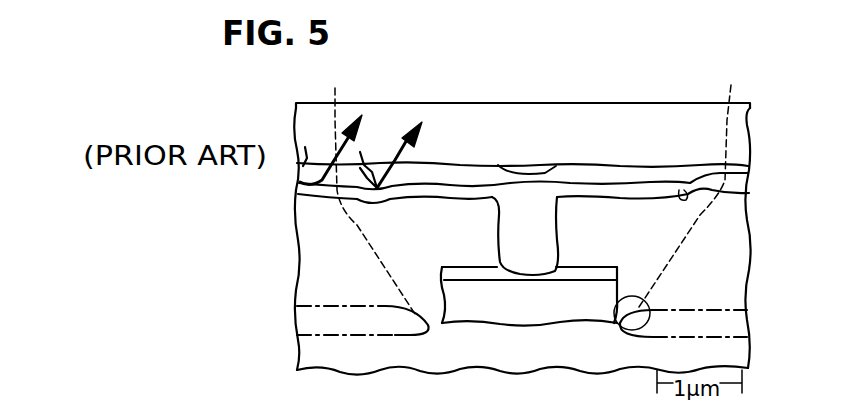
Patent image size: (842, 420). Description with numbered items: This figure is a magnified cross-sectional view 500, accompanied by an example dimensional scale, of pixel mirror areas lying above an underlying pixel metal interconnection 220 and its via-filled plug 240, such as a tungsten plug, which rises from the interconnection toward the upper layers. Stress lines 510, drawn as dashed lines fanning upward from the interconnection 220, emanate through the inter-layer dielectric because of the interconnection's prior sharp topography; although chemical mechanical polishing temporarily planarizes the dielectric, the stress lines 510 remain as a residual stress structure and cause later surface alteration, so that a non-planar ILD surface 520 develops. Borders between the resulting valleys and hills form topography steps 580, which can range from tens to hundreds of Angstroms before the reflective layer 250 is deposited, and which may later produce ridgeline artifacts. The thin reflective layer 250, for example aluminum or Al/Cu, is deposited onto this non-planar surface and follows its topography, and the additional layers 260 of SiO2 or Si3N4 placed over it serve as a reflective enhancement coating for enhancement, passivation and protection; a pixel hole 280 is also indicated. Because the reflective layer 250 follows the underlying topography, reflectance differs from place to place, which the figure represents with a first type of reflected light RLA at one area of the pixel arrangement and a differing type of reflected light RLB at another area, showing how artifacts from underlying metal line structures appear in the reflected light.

The magnified cross-sectional view 500 is at (553, 82).
The stress lines 510 is at (527, 185).
The non-planar ILD surface 520 is at (635, 192).
The pixel metal interconnection 220 is at (618, 330).
The via-filled plug 240 is at (555, 213).
The reflective layer 250 is at (643, 185).
The additional layers 260 is at (603, 178).
The pixel hole 280 is at (507, 163).
The topography steps 580 is at (390, 187).
The first type of reflected light RLA is at (365, 130).
The differing type of reflected light RLB is at (425, 131).